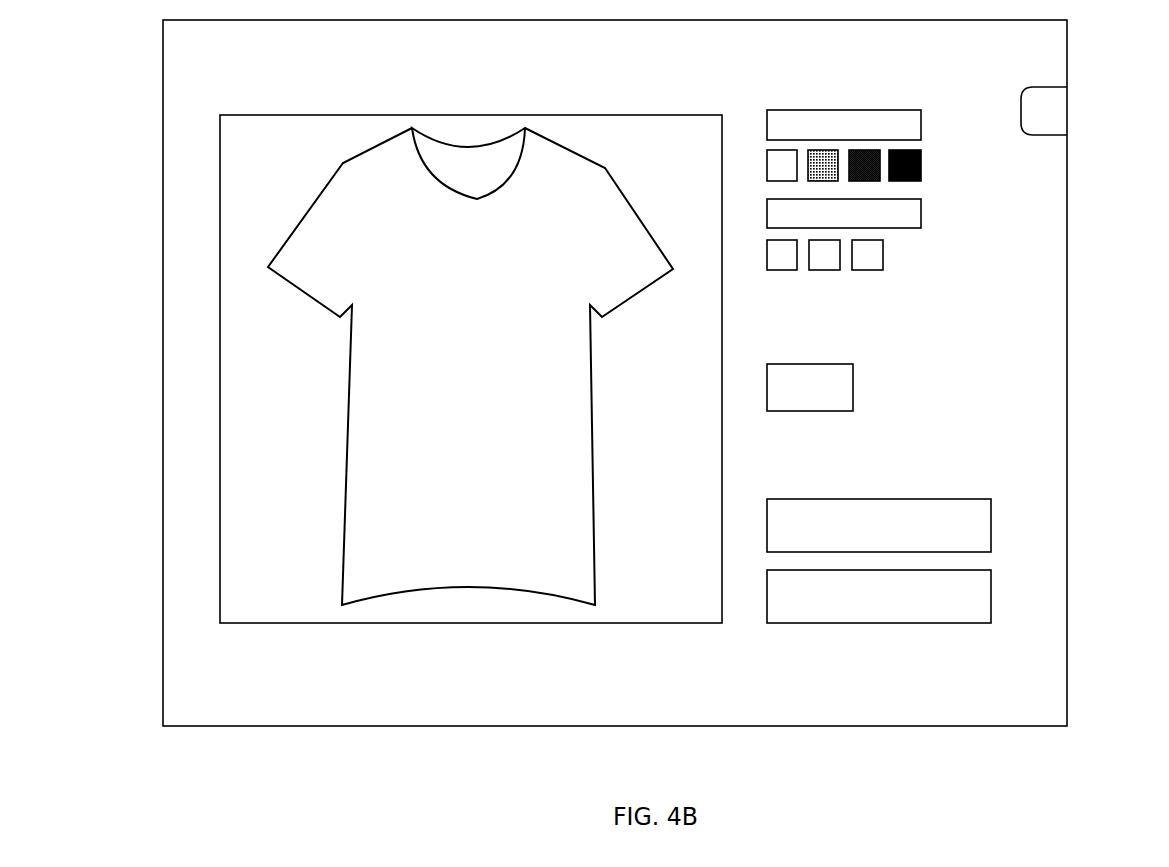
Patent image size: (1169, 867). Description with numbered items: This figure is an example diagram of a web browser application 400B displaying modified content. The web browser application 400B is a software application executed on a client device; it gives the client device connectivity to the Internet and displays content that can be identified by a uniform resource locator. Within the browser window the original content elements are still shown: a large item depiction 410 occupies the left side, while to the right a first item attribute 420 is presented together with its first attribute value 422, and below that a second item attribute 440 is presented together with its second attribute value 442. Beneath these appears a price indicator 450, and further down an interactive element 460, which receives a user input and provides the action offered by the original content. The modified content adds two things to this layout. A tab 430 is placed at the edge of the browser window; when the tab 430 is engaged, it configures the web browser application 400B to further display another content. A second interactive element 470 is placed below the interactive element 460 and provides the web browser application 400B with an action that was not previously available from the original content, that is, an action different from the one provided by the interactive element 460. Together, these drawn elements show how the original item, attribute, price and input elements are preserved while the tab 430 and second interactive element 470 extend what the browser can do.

The web browser application 400B is at (654, 373).
The item depiction 410 is at (471, 337).
The first item attribute 420 is at (844, 96).
The first attribute value 422 is at (876, 146).
The tab 430 is at (1032, 147).
The second item attribute 440 is at (872, 234).
The second attribute value 442 is at (845, 285).
The price indicator 450 is at (838, 402).
The interactive element 460 is at (907, 537).
The second interactive element 470 is at (907, 611).